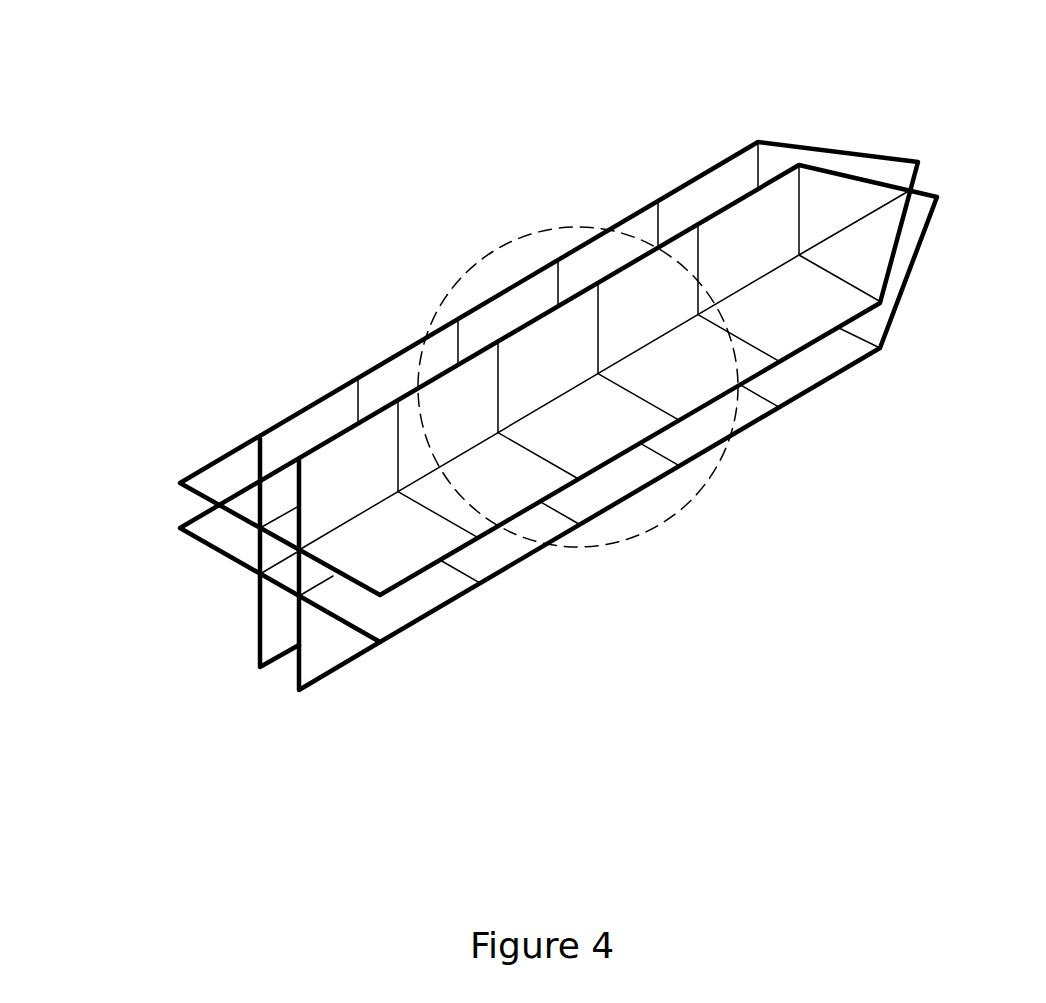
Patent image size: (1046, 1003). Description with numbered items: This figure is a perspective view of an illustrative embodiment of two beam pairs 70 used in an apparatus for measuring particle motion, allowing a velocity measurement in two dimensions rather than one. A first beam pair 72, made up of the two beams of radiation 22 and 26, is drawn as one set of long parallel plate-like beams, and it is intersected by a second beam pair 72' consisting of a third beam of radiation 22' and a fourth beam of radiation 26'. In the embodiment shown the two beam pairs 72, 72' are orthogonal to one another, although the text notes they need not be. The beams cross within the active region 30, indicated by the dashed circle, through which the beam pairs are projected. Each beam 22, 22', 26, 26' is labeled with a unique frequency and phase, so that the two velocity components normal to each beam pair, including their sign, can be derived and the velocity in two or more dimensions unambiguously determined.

The two beam pairs 70 is at (542, 118).
The active region 30 is at (457, 277).
The first beam pair 72 is at (562, 481).
The second beam pair 72' is at (492, 392).
The beam of radiation 22 is at (603, 447).
The beam of radiation 26 is at (500, 437).
The third beam of radiation 22' is at (552, 403).
The fourth beam of radiation 26' is at (525, 368).